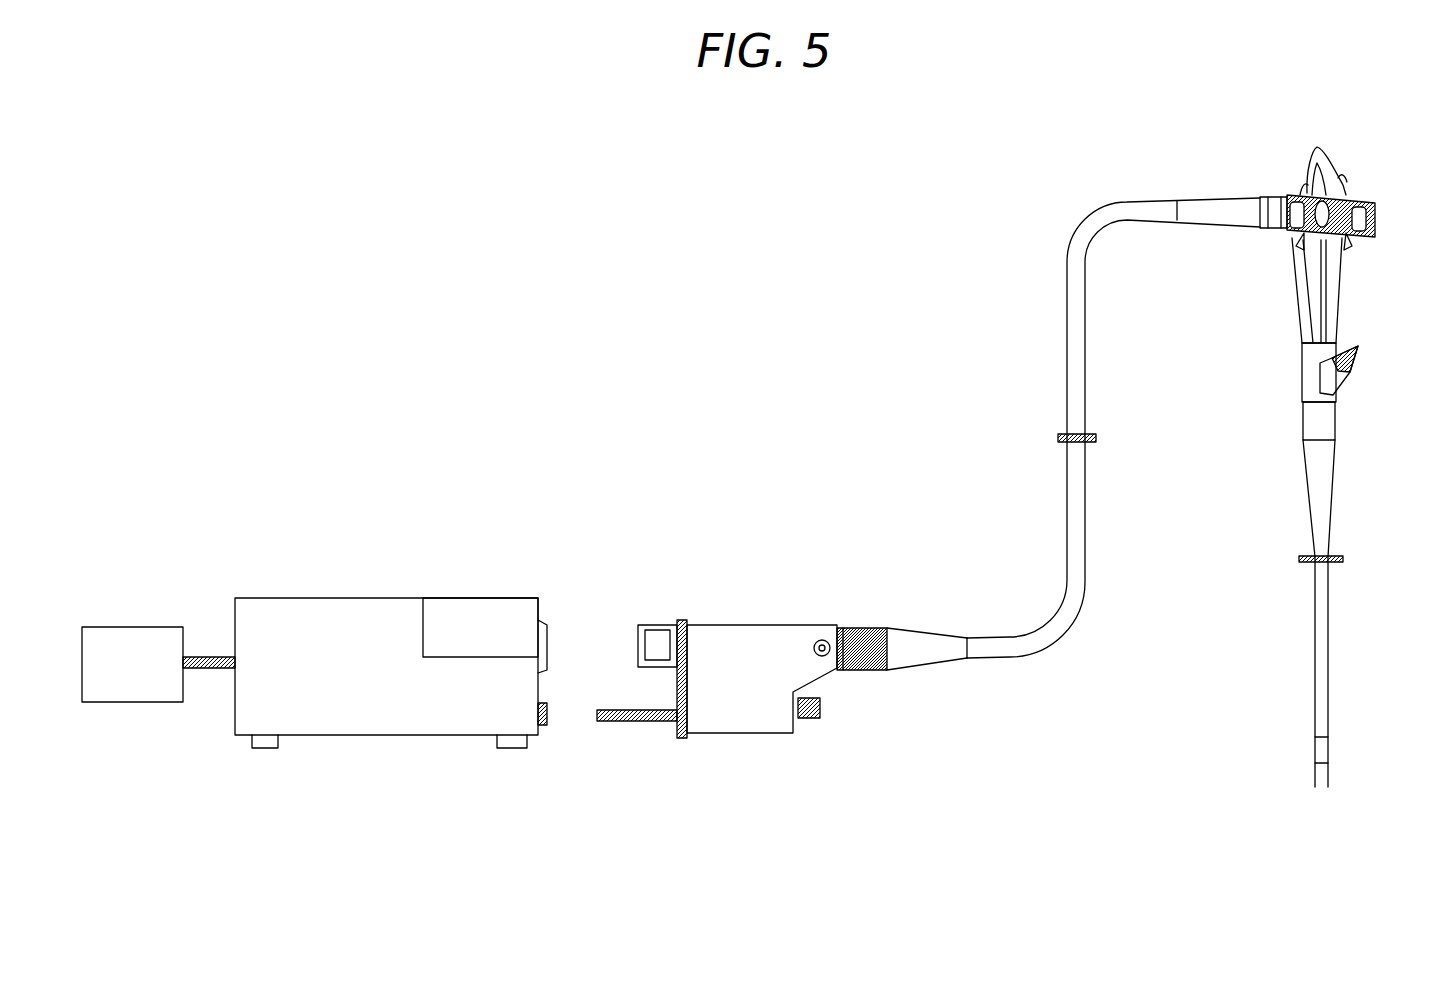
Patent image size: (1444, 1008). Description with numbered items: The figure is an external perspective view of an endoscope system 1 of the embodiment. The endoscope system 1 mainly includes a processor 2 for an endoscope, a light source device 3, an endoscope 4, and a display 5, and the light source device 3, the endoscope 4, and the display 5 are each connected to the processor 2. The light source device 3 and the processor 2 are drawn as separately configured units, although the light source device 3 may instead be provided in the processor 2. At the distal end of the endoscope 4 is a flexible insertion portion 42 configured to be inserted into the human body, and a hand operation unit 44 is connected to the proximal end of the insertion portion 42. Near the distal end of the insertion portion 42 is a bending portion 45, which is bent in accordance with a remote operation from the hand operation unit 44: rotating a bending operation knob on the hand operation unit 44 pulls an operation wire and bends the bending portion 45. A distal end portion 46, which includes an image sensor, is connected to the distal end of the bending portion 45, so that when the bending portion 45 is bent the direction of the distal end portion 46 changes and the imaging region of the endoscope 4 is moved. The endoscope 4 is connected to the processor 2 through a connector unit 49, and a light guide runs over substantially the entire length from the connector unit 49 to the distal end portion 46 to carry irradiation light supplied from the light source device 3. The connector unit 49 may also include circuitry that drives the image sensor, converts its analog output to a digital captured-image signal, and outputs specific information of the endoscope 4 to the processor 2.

The endoscope system 1 is at (886, 338).
The processor 2 is at (378, 598).
The light source device 3 is at (469, 605).
The endoscope 4 is at (1291, 471).
The display 5 is at (134, 626).
The insertion portion 42 is at (1365, 618).
The hand operation unit 44 is at (1372, 222).
The bending portion 45 is at (1330, 755).
The distal end portion 46 is at (1330, 782).
The connector unit 49 is at (738, 622).